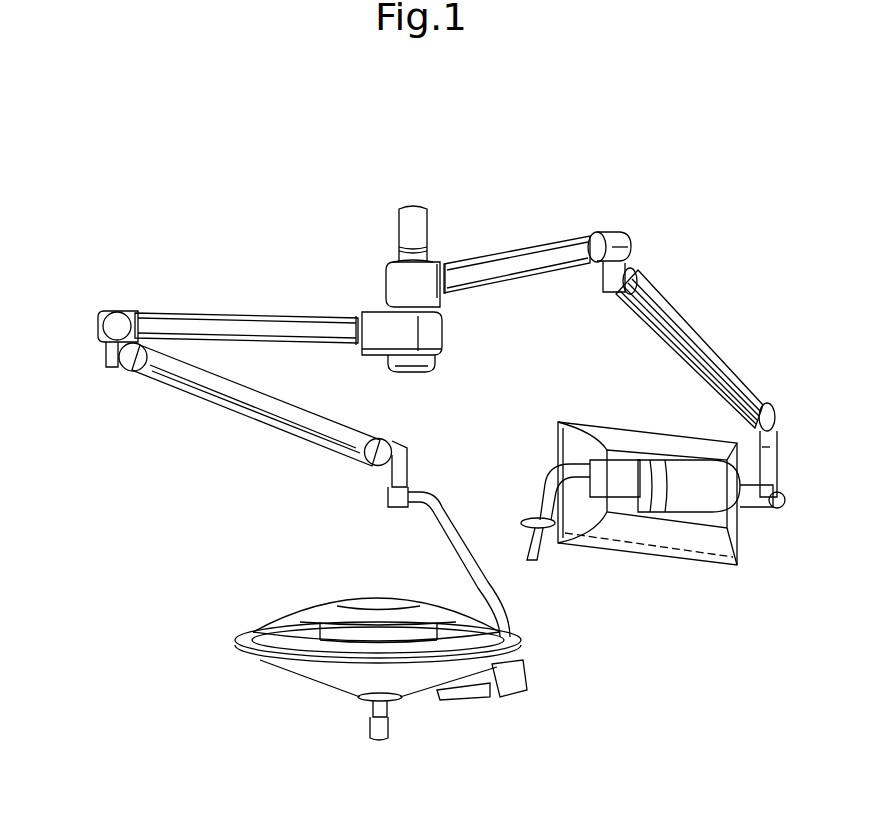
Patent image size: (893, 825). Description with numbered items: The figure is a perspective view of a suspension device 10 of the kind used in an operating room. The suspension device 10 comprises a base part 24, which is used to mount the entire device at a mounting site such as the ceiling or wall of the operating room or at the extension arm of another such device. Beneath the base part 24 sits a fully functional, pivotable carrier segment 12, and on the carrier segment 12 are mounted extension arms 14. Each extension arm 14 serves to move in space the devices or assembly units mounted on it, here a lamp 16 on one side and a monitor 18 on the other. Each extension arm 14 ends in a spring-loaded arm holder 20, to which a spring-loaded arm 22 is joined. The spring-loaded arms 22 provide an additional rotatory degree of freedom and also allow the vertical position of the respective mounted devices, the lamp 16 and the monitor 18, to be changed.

The suspension device 10 is at (413, 200).
The carrier segment 12 is at (395, 330).
The extension arm 14 is at (217, 327).
The lamp 16 is at (353, 680).
The monitor 18 is at (705, 485).
The spring-loaded arm holder 20 is at (117, 326).
The spring-loaded arm 22 is at (162, 372).
The base part 24 is at (418, 228).